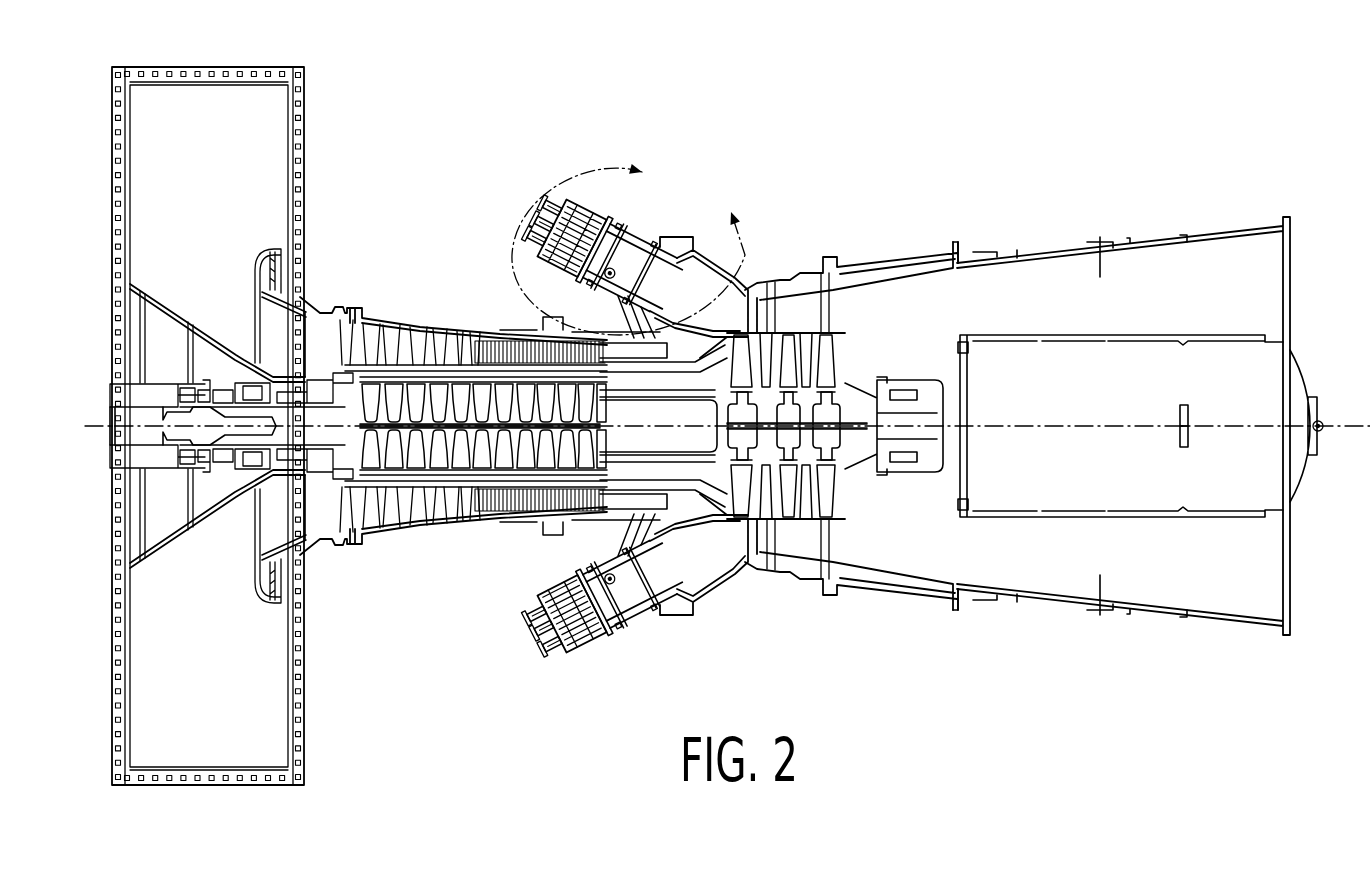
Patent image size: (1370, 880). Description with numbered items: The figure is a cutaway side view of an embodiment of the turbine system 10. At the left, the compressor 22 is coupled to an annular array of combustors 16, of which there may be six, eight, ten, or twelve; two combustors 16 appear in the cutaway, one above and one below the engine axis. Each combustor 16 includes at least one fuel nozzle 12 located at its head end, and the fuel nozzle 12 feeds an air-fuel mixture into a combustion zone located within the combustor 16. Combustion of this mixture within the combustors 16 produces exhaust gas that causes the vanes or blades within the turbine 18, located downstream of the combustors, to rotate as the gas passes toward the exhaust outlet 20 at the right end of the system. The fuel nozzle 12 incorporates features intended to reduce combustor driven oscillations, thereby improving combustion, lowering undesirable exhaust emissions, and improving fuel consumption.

The turbine system 10 is at (727, 426).
The fuel nozzle 12 is at (575, 285).
The combustor 16 is at (645, 225).
The turbine 18 is at (772, 327).
The exhaust outlet 20 is at (1040, 287).
The compressor 22 is at (393, 340).